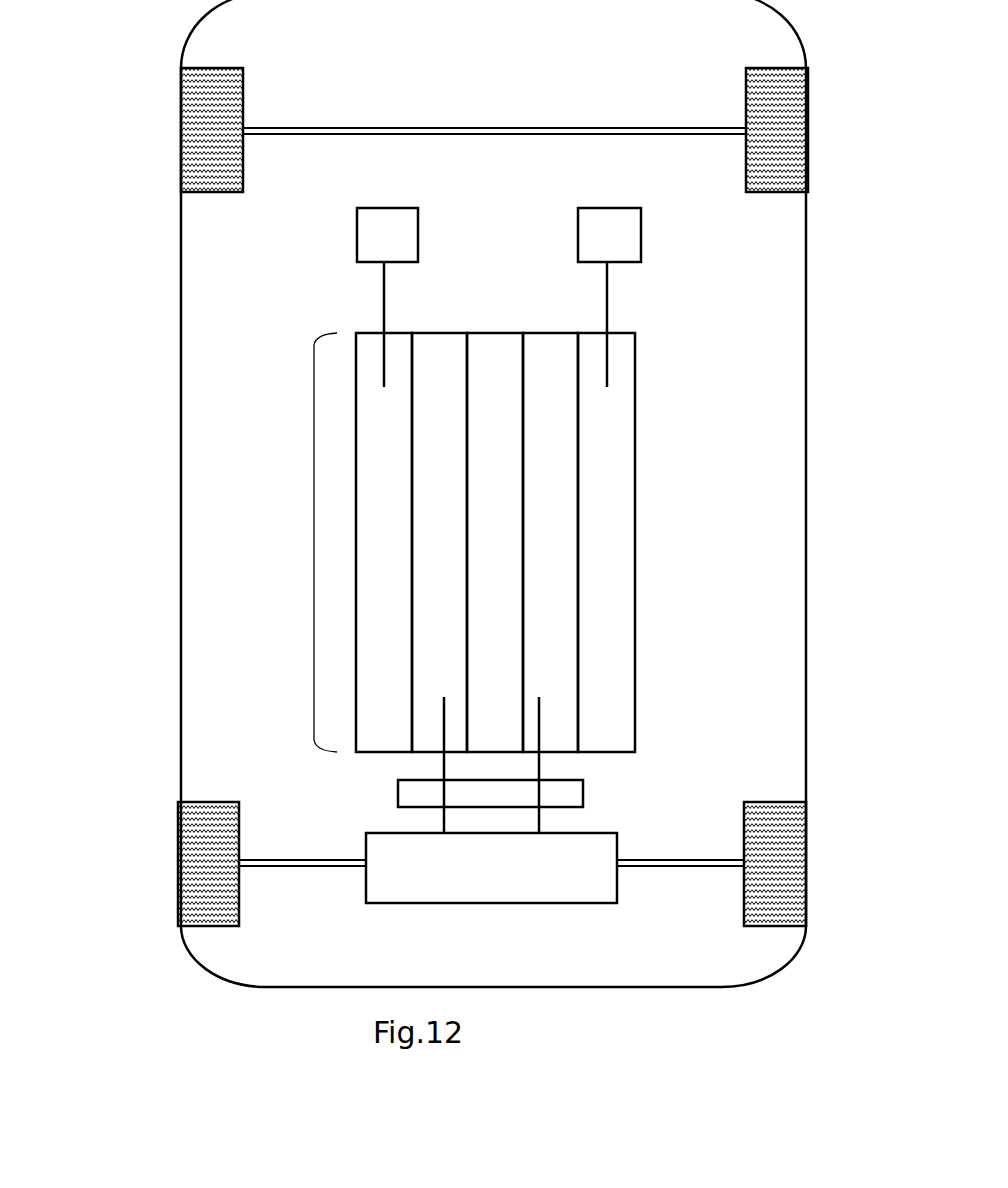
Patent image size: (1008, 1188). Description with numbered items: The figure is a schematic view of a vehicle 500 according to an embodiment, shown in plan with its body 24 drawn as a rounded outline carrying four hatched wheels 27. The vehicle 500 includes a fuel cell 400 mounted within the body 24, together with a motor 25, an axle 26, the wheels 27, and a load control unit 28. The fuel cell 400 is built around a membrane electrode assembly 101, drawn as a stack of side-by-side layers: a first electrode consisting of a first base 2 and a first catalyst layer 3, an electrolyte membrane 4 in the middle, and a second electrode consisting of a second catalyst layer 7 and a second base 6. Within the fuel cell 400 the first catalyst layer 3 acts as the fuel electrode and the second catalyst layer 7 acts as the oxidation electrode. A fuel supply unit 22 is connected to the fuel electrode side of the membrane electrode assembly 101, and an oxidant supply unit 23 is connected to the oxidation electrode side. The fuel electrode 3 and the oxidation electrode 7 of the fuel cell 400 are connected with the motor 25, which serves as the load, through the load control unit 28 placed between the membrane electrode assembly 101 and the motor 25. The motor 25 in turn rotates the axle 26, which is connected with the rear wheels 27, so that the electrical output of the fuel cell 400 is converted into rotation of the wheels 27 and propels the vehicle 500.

The vehicle 500 is at (77, 88).
The fuel cell 400 is at (307, 276).
The membrane electrode assembly 101 is at (447, 507).
The first base 2 is at (366, 357).
The first catalyst layer 3 is at (428, 357).
The electrolyte membrane 4 is at (487, 357).
The second catalyst layer 7 is at (560, 357).
The second base 6 is at (625, 357).
The fuel supply unit 22 is at (388, 237).
The oxidant supply unit 23 is at (610, 237).
The body 24 is at (782, 536).
The motor 25 is at (500, 888).
The axle 26 is at (630, 868).
The wheels 27 is at (780, 872).
The load control unit 28 is at (400, 790).